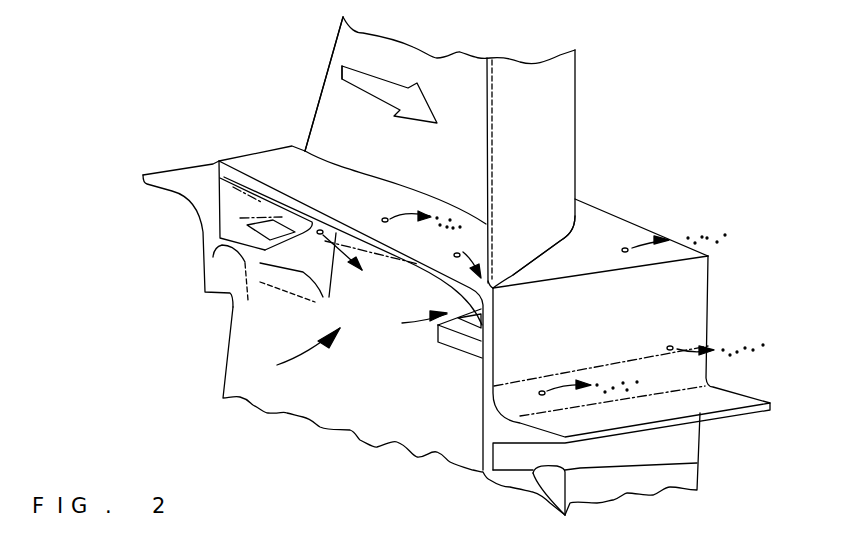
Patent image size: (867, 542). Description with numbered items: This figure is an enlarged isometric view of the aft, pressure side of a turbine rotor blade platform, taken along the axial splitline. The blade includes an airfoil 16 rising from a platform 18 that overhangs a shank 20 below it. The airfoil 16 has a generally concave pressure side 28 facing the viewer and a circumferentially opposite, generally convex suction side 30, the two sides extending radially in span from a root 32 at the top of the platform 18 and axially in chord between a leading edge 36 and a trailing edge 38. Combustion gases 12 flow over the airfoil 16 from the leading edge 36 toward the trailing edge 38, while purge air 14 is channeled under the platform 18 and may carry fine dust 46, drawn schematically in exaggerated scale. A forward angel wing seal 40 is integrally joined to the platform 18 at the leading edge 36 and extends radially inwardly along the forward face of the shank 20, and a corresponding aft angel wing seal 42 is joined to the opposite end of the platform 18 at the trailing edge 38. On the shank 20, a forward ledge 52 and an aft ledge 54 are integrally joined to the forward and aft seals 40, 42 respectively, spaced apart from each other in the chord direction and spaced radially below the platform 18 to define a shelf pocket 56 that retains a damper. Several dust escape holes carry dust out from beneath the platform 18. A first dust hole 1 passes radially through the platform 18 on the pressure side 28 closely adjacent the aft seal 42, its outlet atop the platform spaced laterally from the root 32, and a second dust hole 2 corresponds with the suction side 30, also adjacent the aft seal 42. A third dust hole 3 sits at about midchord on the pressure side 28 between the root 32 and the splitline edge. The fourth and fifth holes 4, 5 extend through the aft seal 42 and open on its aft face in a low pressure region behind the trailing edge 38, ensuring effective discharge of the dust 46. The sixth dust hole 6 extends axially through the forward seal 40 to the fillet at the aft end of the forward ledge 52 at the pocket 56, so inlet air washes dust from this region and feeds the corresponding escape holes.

The first dust escape hole 1 is at (454, 253).
The second dust escape hole 2 is at (625, 248).
The third dust escape hole 3 is at (385, 218).
The fourth escape hole 4 is at (544, 391).
The fifth escape hole 5 is at (673, 346).
The sixth dust hole 6 is at (319, 235).
The combustion gases 12 is at (366, 72).
The purge air 14 is at (303, 356).
The airfoil 16 is at (514, 50).
The platform 18 is at (591, 203).
The shank 20 is at (392, 421).
The pressure side 28 is at (450, 157).
The suction side 30 is at (558, 211).
The root 32 is at (332, 163).
The leading edge 36 is at (327, 70).
The trailing edge 38 is at (489, 114).
The forward angel wing seal 40 is at (188, 175).
The aft angel wing seal 42 is at (710, 276).
The dust 46 is at (708, 232).
The forward ledge 52 is at (252, 243).
The aft ledge 54 is at (450, 340).
The shelf pocket 56 is at (407, 323).